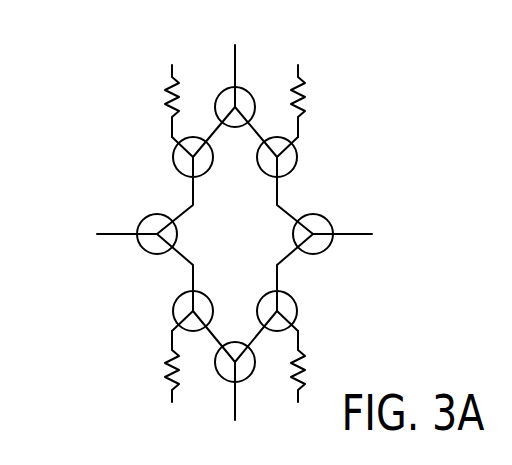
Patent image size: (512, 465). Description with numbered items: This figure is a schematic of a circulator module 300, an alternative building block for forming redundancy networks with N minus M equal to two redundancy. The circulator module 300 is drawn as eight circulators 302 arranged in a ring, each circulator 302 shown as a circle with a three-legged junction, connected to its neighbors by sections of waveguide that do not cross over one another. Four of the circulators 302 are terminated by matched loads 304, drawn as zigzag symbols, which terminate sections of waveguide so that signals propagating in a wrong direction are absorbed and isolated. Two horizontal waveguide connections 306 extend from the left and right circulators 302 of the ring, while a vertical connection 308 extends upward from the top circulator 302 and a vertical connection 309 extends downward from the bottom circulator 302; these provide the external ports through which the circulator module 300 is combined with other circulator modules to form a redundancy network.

The circulator module 300 is at (437, 150).
The circulator 302 is at (173, 163).
The matched load 304 is at (168, 100).
The input terminal 306 is at (110, 232).
The supply line 308 is at (233, 68).
The ground line 309 is at (233, 395).